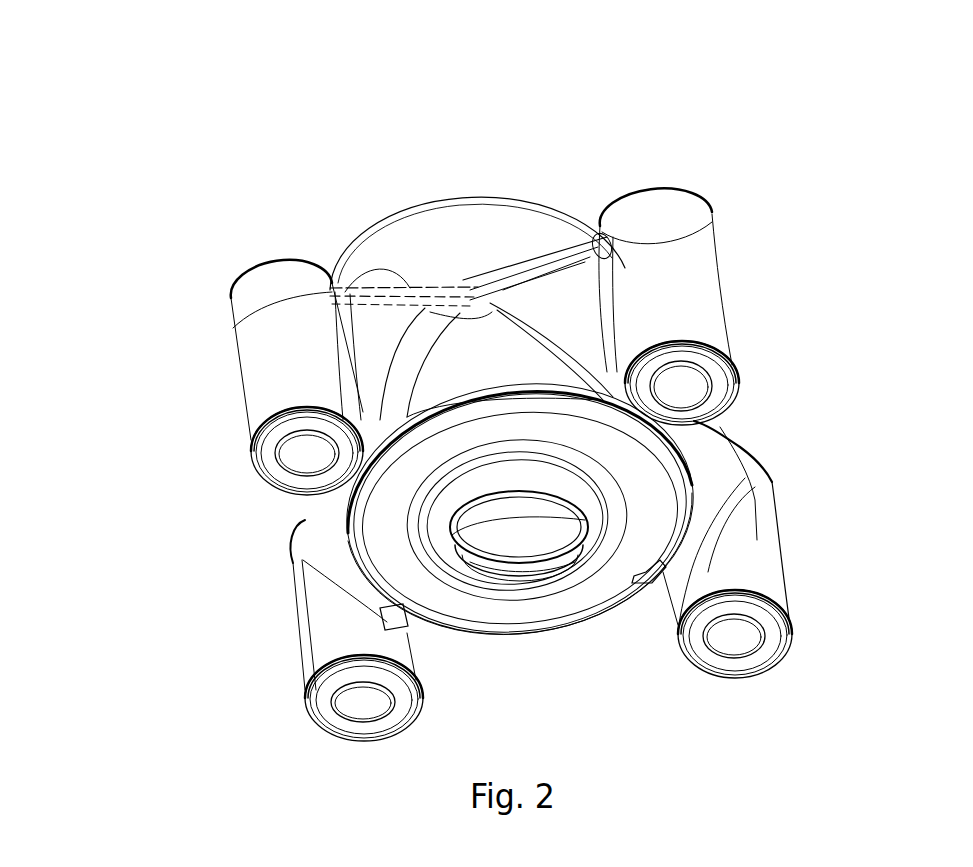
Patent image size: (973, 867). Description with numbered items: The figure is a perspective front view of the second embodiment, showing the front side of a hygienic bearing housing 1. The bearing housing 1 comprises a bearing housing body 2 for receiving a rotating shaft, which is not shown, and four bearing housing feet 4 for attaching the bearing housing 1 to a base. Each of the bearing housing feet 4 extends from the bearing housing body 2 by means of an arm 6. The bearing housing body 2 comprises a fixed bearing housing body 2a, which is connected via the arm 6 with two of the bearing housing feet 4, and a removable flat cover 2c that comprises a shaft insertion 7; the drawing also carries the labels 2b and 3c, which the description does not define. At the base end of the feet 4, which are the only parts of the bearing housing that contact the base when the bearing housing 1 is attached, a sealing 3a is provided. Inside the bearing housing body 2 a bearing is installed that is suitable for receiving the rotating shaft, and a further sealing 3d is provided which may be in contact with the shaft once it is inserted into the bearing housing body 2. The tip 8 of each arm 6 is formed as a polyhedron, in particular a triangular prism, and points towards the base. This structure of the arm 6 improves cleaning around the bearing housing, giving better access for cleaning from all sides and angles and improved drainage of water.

The hygienic bearing housing 1 is at (198, 59).
The bearing housing body 2 is at (474, 290).
The fixed bearing housing body 2a is at (507, 340).
The dome top of housing 2b is at (507, 232).
The removable flat cover 2c is at (487, 408).
The sealing 3a is at (270, 423).
The lower right mounting lug 3c is at (672, 442).
The sealing 3d is at (443, 537).
The bearing housing feet 4 is at (713, 279).
The arm 6 is at (575, 293).
The shaft insertion 7 is at (520, 519).
The tip of the arm 8 is at (663, 573).